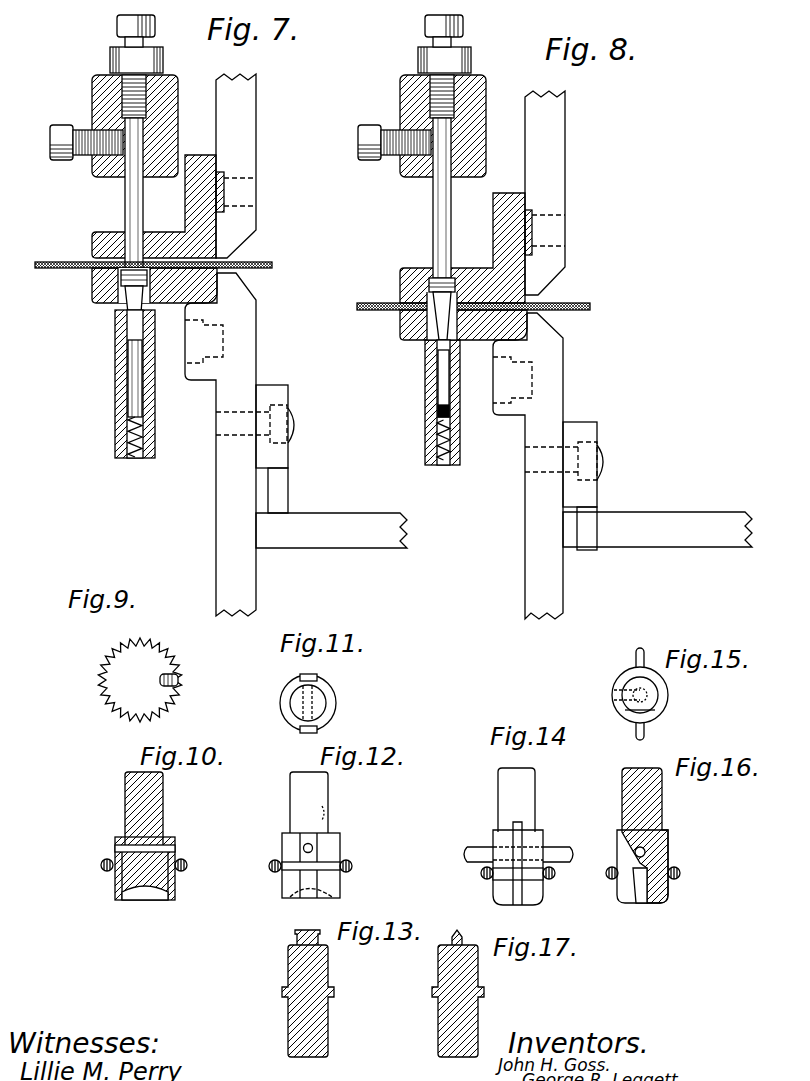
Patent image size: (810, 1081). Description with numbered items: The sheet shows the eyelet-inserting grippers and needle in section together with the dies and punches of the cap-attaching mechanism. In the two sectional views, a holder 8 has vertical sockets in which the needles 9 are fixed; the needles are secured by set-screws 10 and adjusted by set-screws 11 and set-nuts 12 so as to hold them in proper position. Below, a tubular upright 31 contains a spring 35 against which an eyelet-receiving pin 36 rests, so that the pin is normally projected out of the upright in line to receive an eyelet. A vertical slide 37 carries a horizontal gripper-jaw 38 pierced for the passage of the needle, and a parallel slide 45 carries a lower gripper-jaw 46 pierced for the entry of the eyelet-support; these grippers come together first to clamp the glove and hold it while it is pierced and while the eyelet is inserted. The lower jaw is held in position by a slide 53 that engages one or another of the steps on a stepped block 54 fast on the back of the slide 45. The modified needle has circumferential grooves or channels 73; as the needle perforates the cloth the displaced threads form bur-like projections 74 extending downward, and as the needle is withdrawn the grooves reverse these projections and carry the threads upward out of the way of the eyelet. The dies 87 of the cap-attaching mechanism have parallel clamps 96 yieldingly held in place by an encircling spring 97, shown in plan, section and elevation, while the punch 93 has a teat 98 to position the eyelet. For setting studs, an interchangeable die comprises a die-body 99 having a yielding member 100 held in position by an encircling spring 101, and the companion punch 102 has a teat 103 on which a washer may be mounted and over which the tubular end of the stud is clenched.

In FIG. 7, the holder 8 is at (92, 90).
In FIG. 8, the holder 8 is at (400, 88).
In FIG. 7, the needles 9 is at (125, 193).
In FIG. 8, the needles 9 is at (433, 198).
In FIG. 7, the set-screws 10 is at (50, 128).
In FIG. 8, the set-screws 10 is at (368, 132).
In FIG. 7, the set-screws 11 is at (117, 22).
In FIG. 8, the set-screws 11 is at (463, 27).
In FIG. 7, the set-nuts 12 is at (110, 55).
In FIG. 8, the set-nuts 12 is at (471, 60).
In FIG. 7, the tubular uprights 31 is at (115, 376).
In FIG. 8, the tubular uprights 31 is at (425, 373).
In FIG. 7, the springs 35 is at (135, 458).
In FIG. 8, the springs 35 is at (444, 462).
In FIG. 7, the eyelet-receiving pins 36 is at (129, 392).
In FIG. 8, the eyelet-receiving pins 36 is at (440, 392).
In FIG. 7, the slide 37 is at (248, 135).
In FIG. 8, the slide 37 is at (560, 185).
In FIG. 7, the gripper-jaw 38 is at (105, 235).
In FIG. 8, the gripper-jaw 38 is at (420, 268).
In FIG. 7, the slide 45 is at (218, 482).
In FIG. 8, the slide 45 is at (530, 505).
In FIG. 7, the gripper-jaw 46 is at (92, 292).
In FIG. 8, the gripper-jaw 46 is at (400, 330).
In FIG. 7, the slide 53 is at (330, 516).
In FIG. 8, the slide 53 is at (680, 515).
In FIG. 7, the stepped block 54 is at (290, 442).
In FIG. 8, the stepped block 54 is at (600, 478).
In FIG. 7, the circumferential grooves or channels 73 is at (127, 302).
In FIG. 8, the circumferential grooves or channels 73 is at (429, 284).
In FIG. 7, the bur-like projections 74 is at (121, 278).
In FIG. 10, the dies 87 is at (125, 810).
In FIG. 11, the dies 87 is at (325, 700).
In FIG. 12, the dies 87 is at (290, 806).
In FIG. 13, the punches 93 is at (288, 963).
In FIG. 10, the parallel clamps 96 is at (120, 888).
In FIG. 11, the parallel clamps 96 is at (302, 675).
In FIG. 12, the parallel clamps 96 is at (286, 893).
In FIG. 9, the encircling spring 97 is at (106, 696).
In FIG. 10, the encircling spring 97 is at (101, 865).
In FIG. 12, the encircling spring 97 is at (270, 864).
In FIG. 13, the teat 98 is at (305, 931).
In FIG. 14, the die-body 99 is at (543, 832).
In FIG. 15, the die-body 99 is at (668, 700).
In FIG. 16, the die-body 99 is at (668, 838).
In FIG. 14, the yielding member 100 is at (518, 905).
In FIG. 16, the yielding member 100 is at (622, 896).
In FIG. 14, the encircling spring 101 is at (481, 873).
In FIG. 16, the encircling spring 101 is at (680, 874).
In FIG. 17, the punch 102 is at (478, 970).
In FIG. 17, the teat 103 is at (457, 931).
In FIG. 14, the teat 103 is at (493, 900).